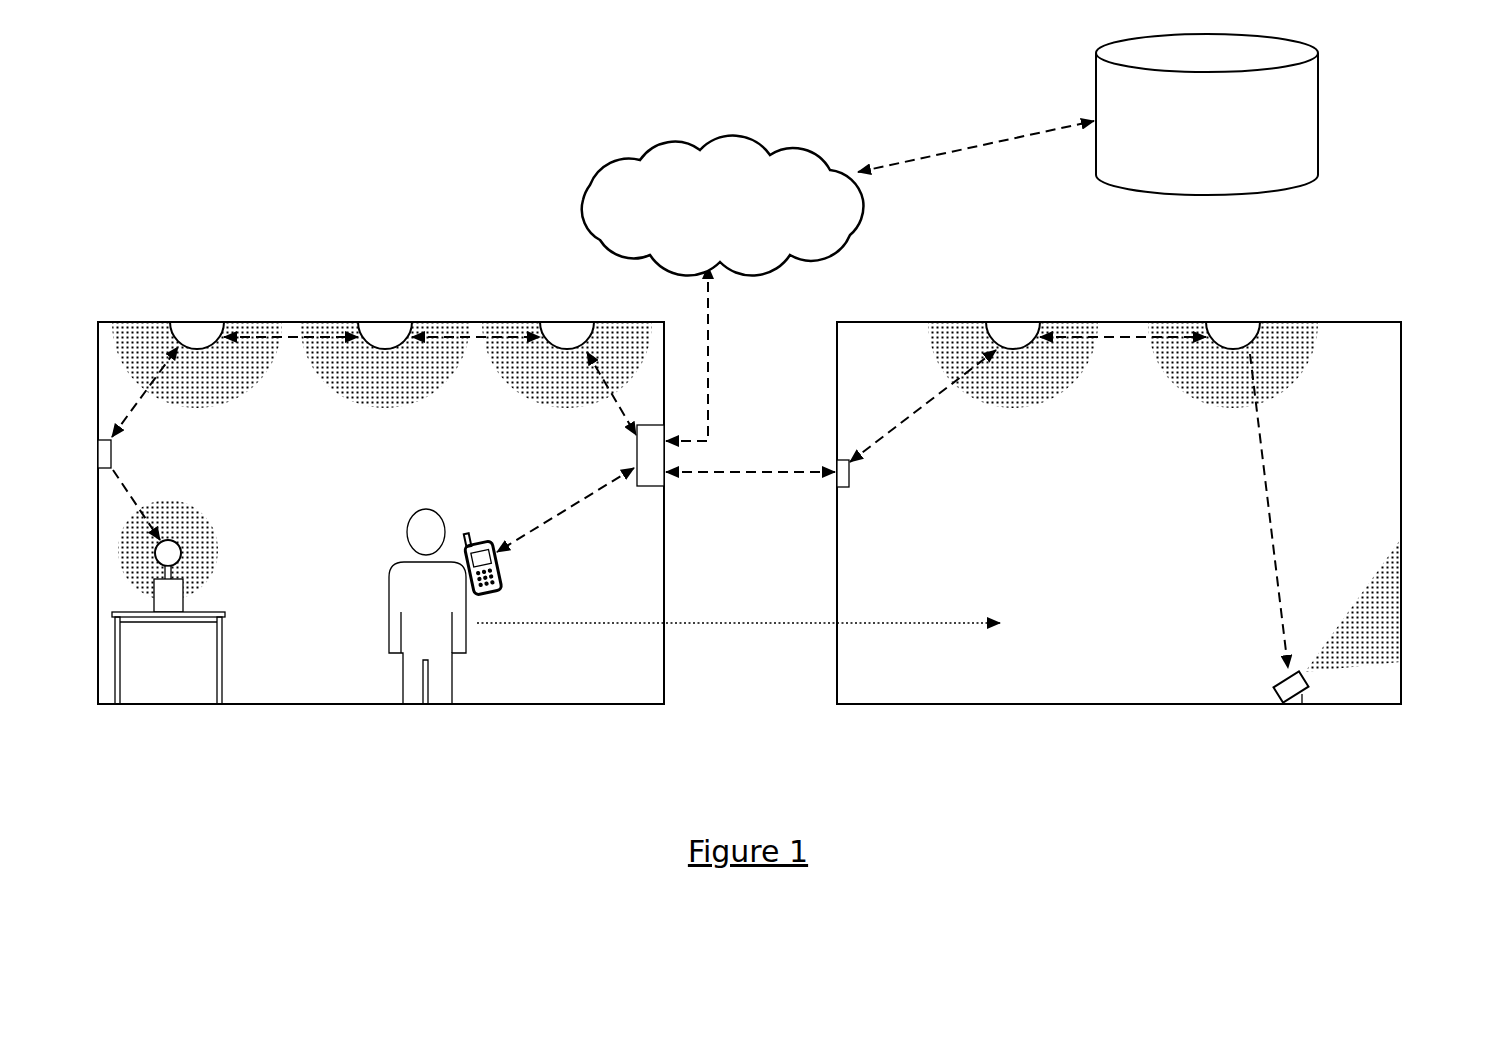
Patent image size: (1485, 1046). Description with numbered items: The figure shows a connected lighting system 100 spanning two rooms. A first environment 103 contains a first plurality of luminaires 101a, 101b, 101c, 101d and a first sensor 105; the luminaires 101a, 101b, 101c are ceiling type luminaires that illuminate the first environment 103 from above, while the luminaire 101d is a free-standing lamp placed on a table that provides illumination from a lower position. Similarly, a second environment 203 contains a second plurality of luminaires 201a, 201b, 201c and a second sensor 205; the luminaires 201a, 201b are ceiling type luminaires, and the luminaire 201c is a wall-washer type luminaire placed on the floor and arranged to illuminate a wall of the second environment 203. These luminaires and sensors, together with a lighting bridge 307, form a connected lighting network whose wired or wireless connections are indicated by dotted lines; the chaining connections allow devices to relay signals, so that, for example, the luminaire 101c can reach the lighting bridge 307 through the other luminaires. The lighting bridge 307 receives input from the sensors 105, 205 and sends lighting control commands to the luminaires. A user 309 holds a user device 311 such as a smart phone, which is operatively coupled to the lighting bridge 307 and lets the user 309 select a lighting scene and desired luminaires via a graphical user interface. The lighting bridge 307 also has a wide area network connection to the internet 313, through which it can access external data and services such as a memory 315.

The system 100 is at (333, 158).
The luminaire 101a is at (555, 322).
The luminaire 101b is at (388, 322).
The luminaire 101c is at (199, 322).
The free-standing lamp type luminaire 101d is at (172, 540).
The first environment 103 is at (664, 552).
The first sensor 105 is at (111, 452).
The luminaire 201a is at (1009, 322).
The luminaire 201b is at (1228, 322).
The wall-washer type luminaire 201c is at (1275, 703).
The second environment 203 is at (1401, 495).
The second sensor 205 is at (849, 480).
The lighting bridge 307 is at (652, 486).
The user 309 is at (390, 575).
The user device 311 is at (500, 575).
The internet 313 is at (723, 206).
The memory 315 is at (1207, 114).